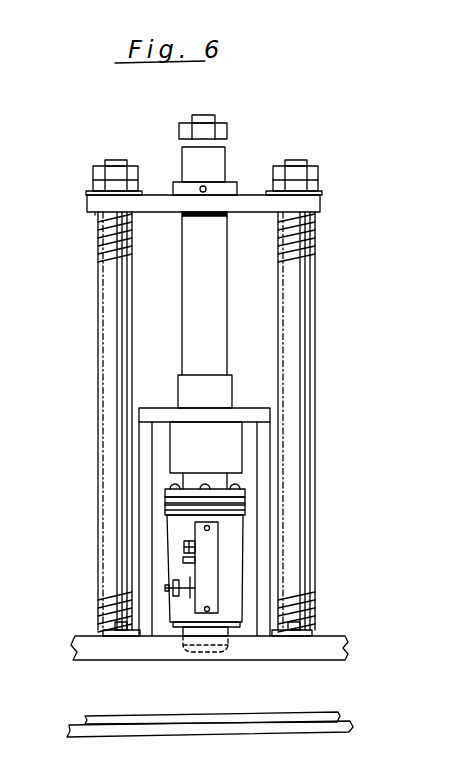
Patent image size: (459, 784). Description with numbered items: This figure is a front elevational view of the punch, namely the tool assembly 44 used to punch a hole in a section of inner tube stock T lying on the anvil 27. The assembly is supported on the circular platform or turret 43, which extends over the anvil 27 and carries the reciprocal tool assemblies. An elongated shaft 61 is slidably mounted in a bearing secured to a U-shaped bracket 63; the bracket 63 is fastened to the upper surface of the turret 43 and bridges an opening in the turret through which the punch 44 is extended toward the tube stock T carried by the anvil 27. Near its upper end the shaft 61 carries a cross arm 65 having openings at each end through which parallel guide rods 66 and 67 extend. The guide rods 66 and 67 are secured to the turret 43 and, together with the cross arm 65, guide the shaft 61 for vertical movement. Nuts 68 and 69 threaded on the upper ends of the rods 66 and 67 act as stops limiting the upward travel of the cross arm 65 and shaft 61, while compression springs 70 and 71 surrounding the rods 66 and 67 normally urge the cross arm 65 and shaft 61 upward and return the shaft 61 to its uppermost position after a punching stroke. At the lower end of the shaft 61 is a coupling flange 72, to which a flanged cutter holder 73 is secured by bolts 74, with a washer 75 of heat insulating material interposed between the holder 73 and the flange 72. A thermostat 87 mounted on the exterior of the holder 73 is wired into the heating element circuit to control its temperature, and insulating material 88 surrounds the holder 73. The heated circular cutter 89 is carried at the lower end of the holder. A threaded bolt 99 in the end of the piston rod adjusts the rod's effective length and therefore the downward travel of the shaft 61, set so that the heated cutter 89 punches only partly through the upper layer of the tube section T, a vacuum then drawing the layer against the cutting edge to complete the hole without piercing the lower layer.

The threaded bolt 99 is at (228, 131).
The nut 68 is at (93, 178).
The nut 69 is at (318, 177).
The cross arm 65 is at (157, 213).
The compression spring 70 is at (98, 228).
The compression spring 71 is at (316, 231).
The elongated shaft 61 is at (221, 280).
The guide rod 67 is at (316, 282).
The guide rod 66 is at (110, 335).
The tool assembly 44 is at (83, 297).
The U-shaped bracket 63 is at (142, 438).
The bolts 74 is at (212, 483).
The coupling flange 72 is at (247, 493).
The flanged cutter holder 73 is at (247, 507).
The washer 75 is at (168, 503).
The insulating material 88 is at (247, 538).
The thermostat 87 is at (212, 572).
The circular cutter 89 is at (196, 650).
The turret 43 is at (72, 661).
The inner tube stock T is at (275, 713).
The anvil 27 is at (172, 728).